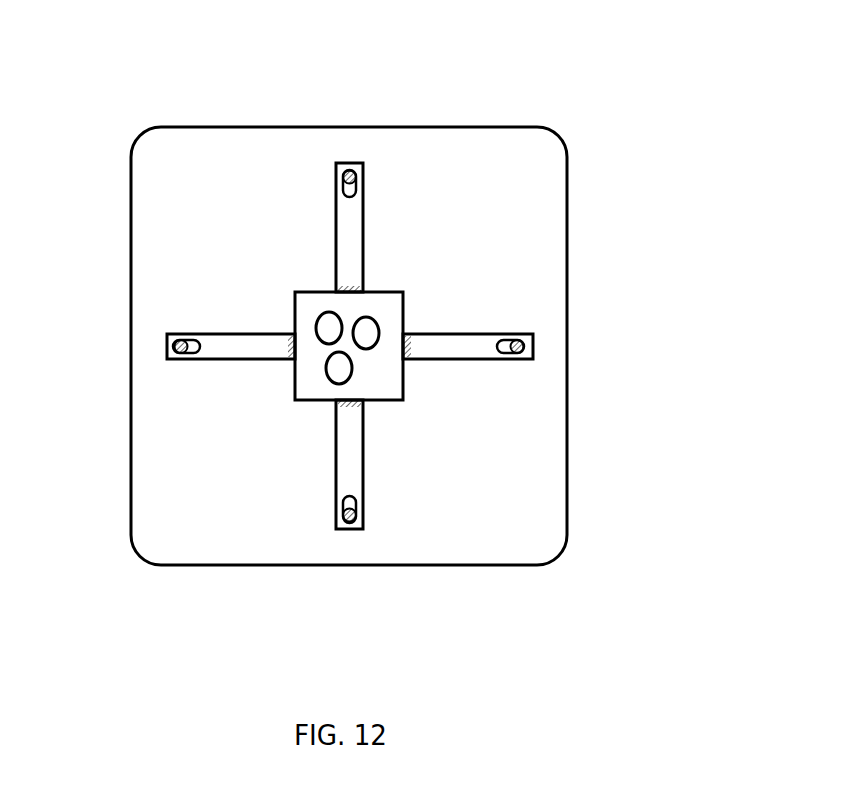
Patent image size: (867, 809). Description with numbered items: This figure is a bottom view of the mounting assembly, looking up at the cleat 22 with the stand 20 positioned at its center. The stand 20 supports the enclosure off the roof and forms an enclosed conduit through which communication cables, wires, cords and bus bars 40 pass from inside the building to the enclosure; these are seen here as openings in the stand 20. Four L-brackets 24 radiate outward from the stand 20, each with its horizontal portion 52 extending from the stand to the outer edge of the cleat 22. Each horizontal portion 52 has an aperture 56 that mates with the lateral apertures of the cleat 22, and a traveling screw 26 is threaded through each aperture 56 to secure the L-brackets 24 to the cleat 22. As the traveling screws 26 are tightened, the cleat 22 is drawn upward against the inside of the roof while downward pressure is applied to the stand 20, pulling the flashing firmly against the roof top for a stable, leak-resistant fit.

The stand 20 is at (403, 400).
The cleat 22 is at (567, 273).
The L-bracket 24 is at (363, 227).
The traveling screw 26 is at (362, 172).
The cables, wires, cords and bus bars 40 is at (328, 357).
The horizontal portion 52 is at (336, 200).
The aperture 56 is at (363, 188).